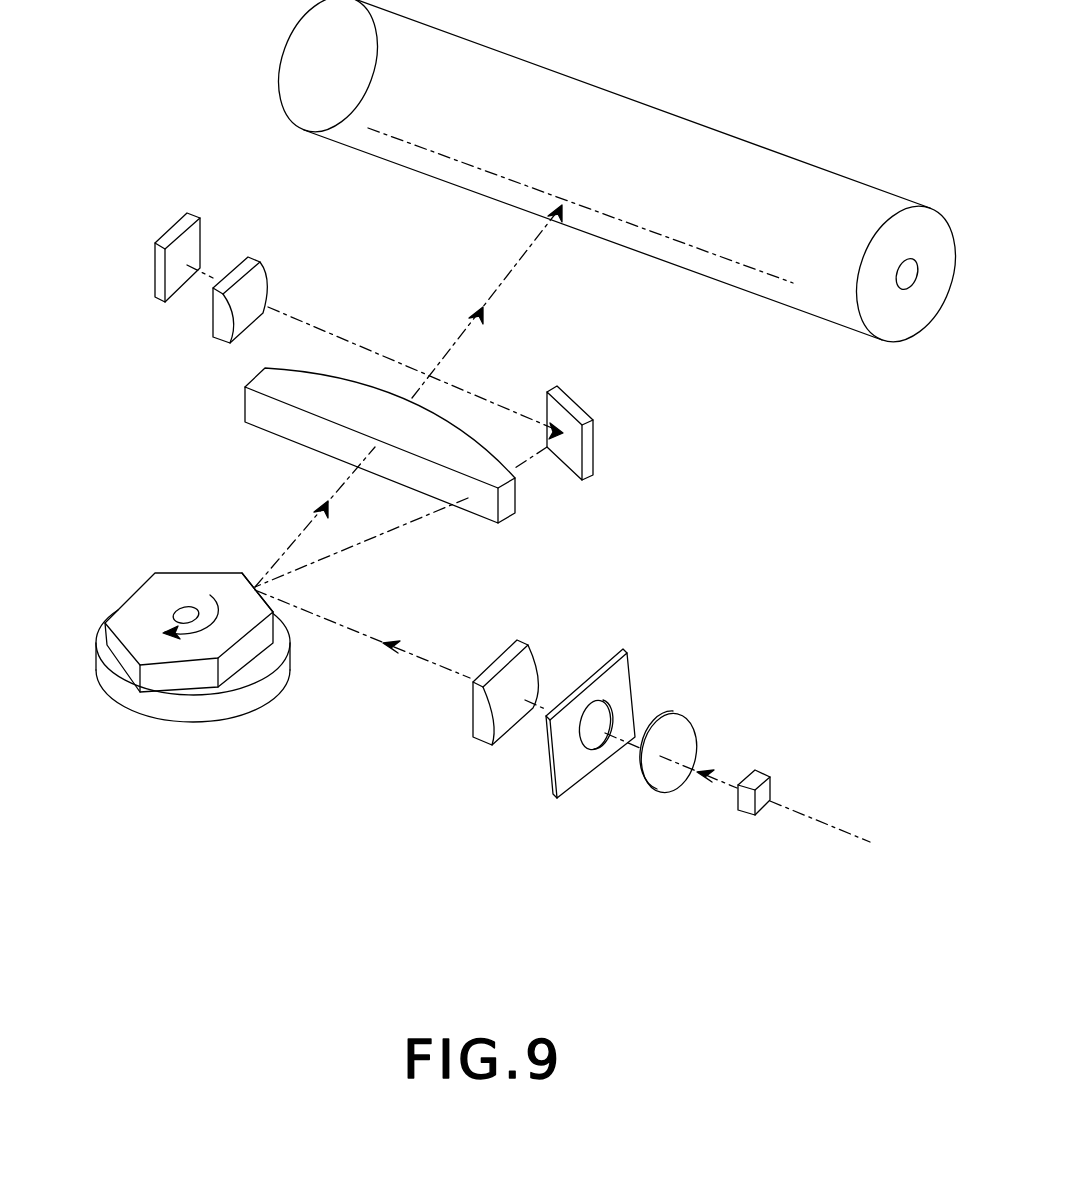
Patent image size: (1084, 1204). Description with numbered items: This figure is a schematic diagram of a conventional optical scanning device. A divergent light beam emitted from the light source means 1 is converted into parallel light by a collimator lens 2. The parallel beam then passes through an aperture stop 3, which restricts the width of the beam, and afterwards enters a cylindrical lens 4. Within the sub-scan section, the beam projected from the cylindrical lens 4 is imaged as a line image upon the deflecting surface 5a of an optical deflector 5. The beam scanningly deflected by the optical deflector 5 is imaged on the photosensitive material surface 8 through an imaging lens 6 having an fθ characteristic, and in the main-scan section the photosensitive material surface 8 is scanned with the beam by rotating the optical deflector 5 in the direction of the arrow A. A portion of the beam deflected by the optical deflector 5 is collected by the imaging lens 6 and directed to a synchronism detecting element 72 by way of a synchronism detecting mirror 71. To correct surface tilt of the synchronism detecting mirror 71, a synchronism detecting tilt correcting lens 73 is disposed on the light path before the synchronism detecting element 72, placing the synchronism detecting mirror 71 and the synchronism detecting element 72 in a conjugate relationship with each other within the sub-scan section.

The light source means 1 is at (737, 810).
The collimator lens 2 is at (653, 772).
The aperture stop 3 is at (558, 767).
The cylindrical lens 4 is at (482, 713).
The optical deflector 5 is at (147, 596).
The deflecting surface 5a is at (257, 585).
The imaging lens 6 is at (265, 373).
The photosensitive material surface 8 is at (762, 298).
The synchronism detecting mirror 71 is at (597, 455).
The synchronism detecting element 72 is at (155, 260).
The synchronism detecting tilt correcting lens 73 is at (212, 318).
The arrow A is at (195, 636).